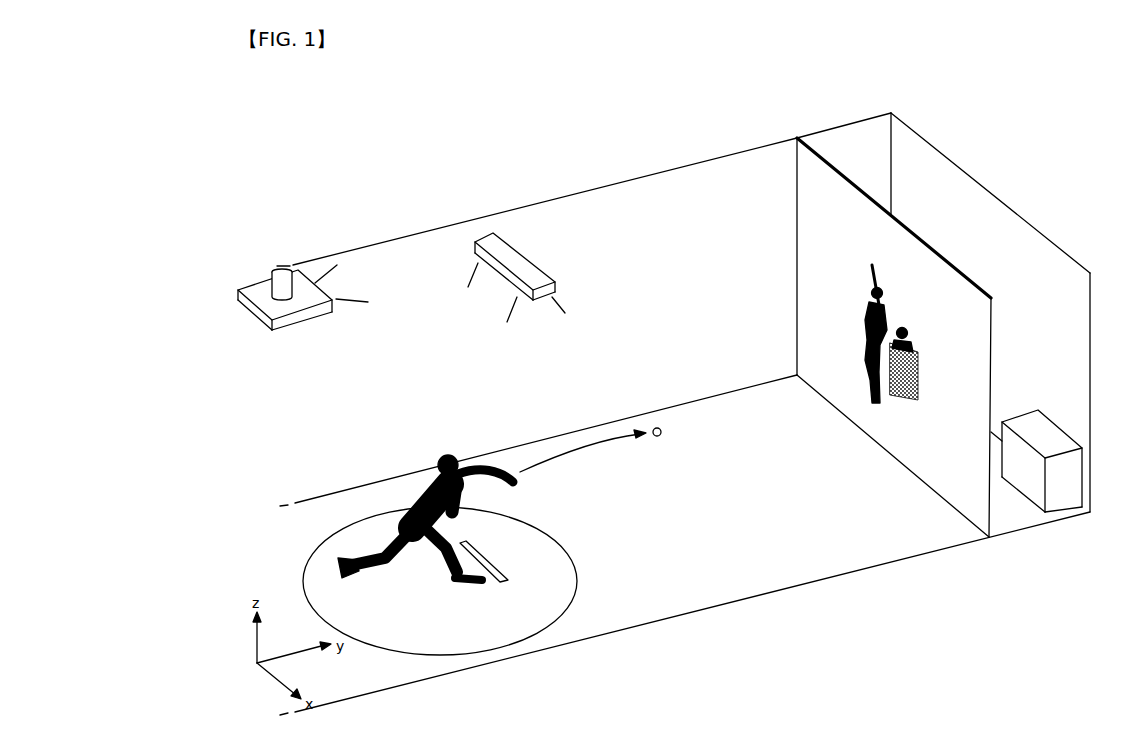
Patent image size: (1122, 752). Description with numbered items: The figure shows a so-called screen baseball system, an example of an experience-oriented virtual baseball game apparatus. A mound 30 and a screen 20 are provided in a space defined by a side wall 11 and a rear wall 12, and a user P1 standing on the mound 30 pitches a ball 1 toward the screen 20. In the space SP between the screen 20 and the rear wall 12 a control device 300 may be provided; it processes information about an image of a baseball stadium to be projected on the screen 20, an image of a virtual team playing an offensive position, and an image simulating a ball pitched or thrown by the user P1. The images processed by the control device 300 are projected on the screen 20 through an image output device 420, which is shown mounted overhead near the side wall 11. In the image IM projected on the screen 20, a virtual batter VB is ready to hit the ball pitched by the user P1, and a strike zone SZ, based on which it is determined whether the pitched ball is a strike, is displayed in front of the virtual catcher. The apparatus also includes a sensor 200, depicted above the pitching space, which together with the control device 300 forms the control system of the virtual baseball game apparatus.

The side wall 11 is at (597, 183).
The rear wall 12 is at (1000, 202).
The screen 20 is at (863, 192).
The space SP is at (1008, 321).
The image IM is at (827, 329).
The virtual batter VB is at (857, 328).
The strike zone SZ is at (923, 380).
The control device 300 is at (1058, 493).
The sensor 200 is at (523, 257).
The image output device 420 is at (297, 318).
The mound 30 is at (580, 558).
The user P1 is at (421, 486).
The ball 1 is at (661, 432).